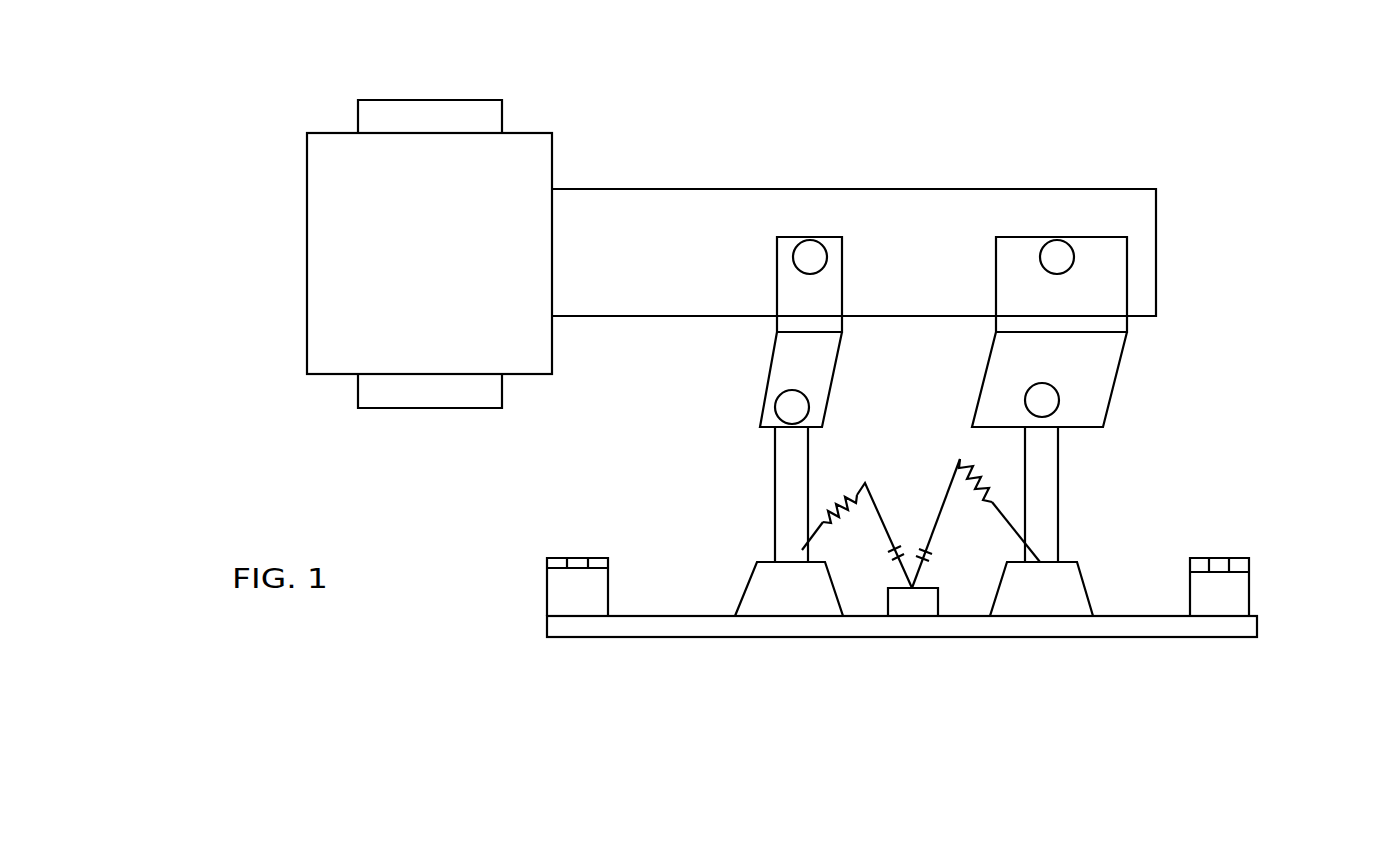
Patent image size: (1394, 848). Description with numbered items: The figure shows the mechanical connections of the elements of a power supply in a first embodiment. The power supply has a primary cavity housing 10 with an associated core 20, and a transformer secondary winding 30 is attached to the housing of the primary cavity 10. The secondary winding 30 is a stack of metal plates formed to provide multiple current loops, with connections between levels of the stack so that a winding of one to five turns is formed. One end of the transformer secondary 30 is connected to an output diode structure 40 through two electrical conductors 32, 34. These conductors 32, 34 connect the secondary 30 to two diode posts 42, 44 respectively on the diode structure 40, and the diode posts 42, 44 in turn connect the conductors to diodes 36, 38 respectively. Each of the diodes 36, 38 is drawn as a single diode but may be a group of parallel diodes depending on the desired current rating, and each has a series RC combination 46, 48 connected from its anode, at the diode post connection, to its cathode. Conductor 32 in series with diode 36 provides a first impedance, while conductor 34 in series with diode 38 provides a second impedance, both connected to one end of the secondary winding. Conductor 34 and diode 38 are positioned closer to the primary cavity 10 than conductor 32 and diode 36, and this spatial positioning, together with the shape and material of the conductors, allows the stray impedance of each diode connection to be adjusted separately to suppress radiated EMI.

The primary cavity housing 10 is at (300, 309).
The core 20 is at (398, 92).
The transformer secondary winding 30 is at (1008, 182).
The electrical conductor 32 is at (1205, 380).
The electrical conductor 34 is at (755, 381).
The diode 36 is at (1130, 600).
The diode 38 is at (732, 598).
The output diode structure 40 is at (1203, 650).
The diode post 42 is at (1168, 478).
The diode post 44 is at (767, 477).
The series RC combination 46 is at (939, 538).
The series RC combination 48 is at (883, 543).